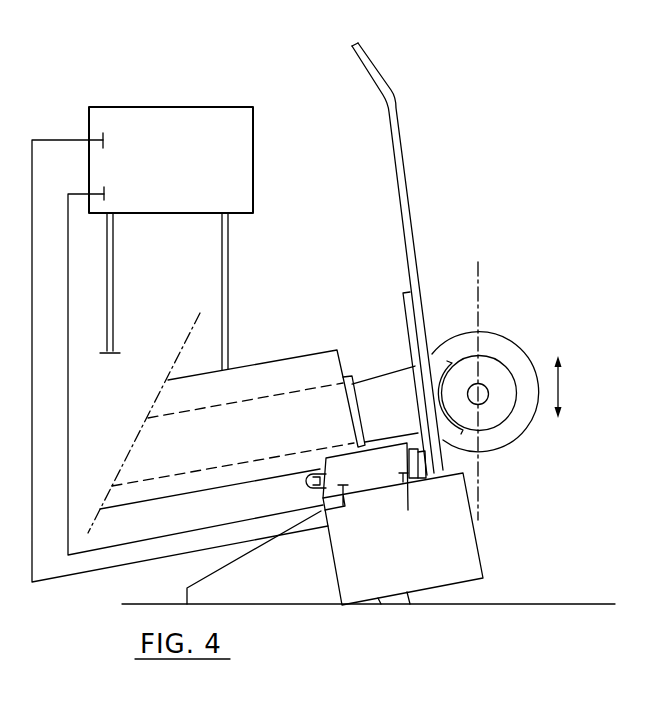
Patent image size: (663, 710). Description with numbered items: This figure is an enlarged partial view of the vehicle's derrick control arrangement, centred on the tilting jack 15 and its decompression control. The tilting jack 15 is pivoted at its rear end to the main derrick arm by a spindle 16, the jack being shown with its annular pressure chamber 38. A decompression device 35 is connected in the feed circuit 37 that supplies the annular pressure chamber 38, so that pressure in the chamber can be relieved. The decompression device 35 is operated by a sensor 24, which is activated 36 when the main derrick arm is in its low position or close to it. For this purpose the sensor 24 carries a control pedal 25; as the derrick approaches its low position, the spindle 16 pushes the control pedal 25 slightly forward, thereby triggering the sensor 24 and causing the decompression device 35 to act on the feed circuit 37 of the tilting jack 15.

The tilting jack 15 is at (232, 418).
The spindle 16 is at (502, 383).
The sensor 24 is at (380, 473).
The control pedal 25 is at (402, 185).
The decompression device 35 is at (252, 143).
The activation of the sensor 36 is at (158, 540).
The feed circuit 37 is at (113, 289).
The annular pressure chamber 38 is at (283, 372).